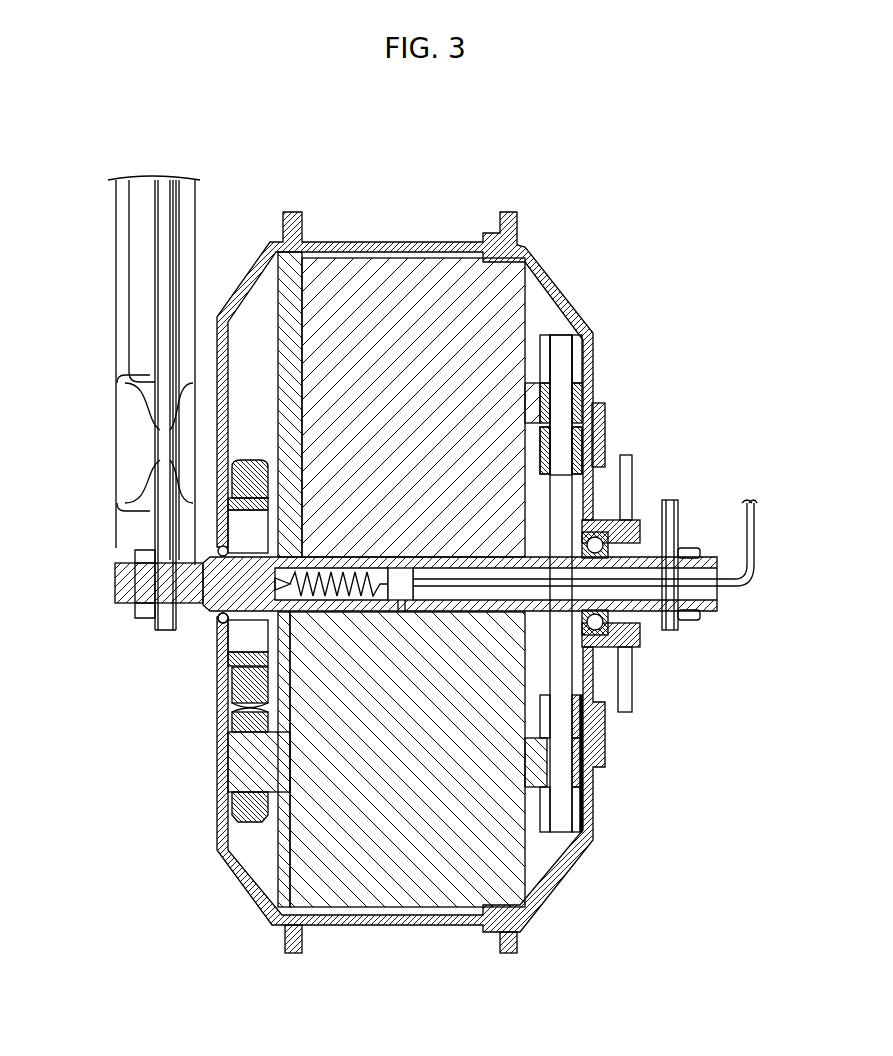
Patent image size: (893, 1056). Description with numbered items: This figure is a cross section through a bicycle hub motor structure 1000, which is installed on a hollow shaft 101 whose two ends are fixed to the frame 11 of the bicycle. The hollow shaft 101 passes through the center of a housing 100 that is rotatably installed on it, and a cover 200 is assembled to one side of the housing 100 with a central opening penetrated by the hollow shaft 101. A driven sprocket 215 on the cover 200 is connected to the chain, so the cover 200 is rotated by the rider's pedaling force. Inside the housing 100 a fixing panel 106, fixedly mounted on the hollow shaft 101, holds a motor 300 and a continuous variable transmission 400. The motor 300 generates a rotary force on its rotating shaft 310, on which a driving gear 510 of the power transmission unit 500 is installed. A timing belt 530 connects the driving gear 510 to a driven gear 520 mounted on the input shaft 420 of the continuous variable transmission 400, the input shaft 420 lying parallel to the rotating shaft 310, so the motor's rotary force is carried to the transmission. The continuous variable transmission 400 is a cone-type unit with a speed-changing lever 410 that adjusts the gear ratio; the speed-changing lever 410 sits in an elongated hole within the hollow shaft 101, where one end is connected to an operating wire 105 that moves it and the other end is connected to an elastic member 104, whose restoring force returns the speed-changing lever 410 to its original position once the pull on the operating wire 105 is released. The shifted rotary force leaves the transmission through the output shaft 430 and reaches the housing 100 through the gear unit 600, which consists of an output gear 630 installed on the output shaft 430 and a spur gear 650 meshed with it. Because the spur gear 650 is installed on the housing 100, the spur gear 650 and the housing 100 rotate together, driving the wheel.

The hub motor structure 1000 is at (626, 276).
The housing 100 is at (330, 242).
The hollow shaft 101 is at (125, 583).
The elastic member 104 is at (223, 623).
The operating wire 105 is at (737, 582).
The fixing panel 106 is at (290, 430).
The frame 11 is at (120, 463).
The cover 200 is at (605, 415).
The driven sprocket 215 is at (627, 472).
The motor 300 is at (394, 266).
The rotating shaft 310 is at (577, 397).
The continuous variable transmission 400 is at (375, 902).
The speed-changing lever 410 is at (405, 600).
The input shaft 420 is at (577, 750).
The output shaft 430 is at (245, 765).
The power transmission unit 500 is at (588, 348).
The driving gear 510 is at (577, 442).
The driven gear 520 is at (582, 800).
The timing belt 530 is at (562, 362).
The gear unit 600 is at (140, 735).
The output gear 630 is at (245, 722).
The spur gear 650 is at (238, 685).